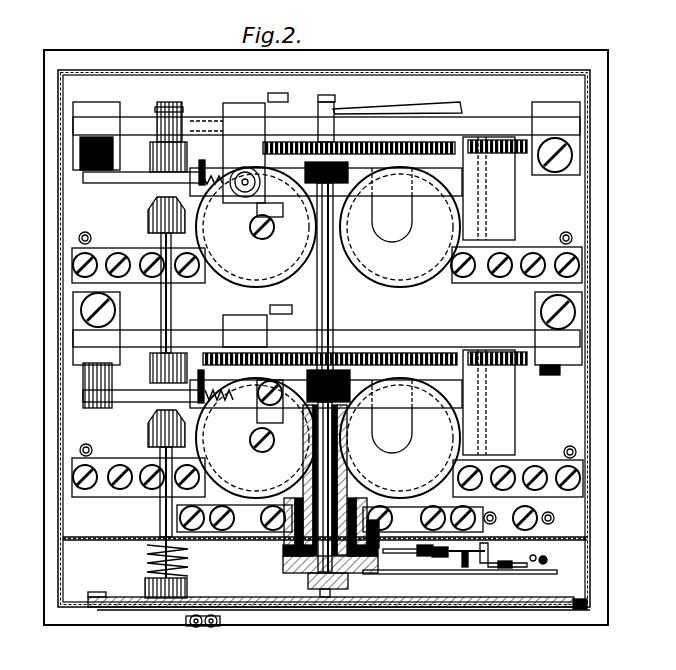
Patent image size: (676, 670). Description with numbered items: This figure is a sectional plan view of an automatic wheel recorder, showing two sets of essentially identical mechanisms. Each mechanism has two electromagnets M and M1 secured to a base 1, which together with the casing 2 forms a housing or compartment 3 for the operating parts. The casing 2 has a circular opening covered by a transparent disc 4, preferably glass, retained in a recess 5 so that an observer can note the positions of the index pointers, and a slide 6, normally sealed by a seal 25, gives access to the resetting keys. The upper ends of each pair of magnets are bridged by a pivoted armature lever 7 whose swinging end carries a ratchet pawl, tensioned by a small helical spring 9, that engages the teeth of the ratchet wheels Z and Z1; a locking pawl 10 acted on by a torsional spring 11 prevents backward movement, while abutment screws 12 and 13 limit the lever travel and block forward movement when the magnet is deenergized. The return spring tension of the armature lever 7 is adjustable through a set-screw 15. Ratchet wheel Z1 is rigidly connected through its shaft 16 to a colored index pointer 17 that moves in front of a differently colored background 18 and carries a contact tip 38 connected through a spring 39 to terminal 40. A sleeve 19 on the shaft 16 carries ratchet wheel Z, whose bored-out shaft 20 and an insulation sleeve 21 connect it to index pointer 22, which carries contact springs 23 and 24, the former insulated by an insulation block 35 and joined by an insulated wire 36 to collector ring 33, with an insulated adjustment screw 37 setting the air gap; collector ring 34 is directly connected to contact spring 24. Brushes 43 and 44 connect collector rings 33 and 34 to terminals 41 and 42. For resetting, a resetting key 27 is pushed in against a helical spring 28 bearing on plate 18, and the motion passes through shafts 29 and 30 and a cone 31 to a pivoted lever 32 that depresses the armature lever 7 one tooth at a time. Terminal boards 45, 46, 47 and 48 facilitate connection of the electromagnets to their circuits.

The base 1 is at (83, 594).
The casing 2 is at (573, 594).
The housing or compartment 3 is at (400, 332).
The transparent disc 4 is at (292, 604).
The recess 5 is at (108, 597).
The slide 6 is at (160, 610).
The armature lever 7 is at (326, 310).
The helical spring 9 is at (210, 190).
The locking pawl 10 is at (210, 160).
The torsional spring 11 is at (201, 150).
The abutment screw 12 is at (150, 157).
The abutment screw 13 is at (280, 211).
The set-screw 15 is at (258, 165).
The shaft 16 is at (336, 300).
The index-pointer 17 is at (557, 572).
The background 18 is at (108, 540).
The sleeve 19 is at (345, 437).
The shaft 20 is at (345, 455).
The insulation sleeve 21 is at (352, 505).
The index-pointer 22 is at (548, 559).
The contact spring 23 is at (466, 568).
The contact spring 24 is at (492, 552).
The seal 25 is at (214, 628).
The resetting key 27 is at (188, 588).
The helical spring 28 is at (186, 562).
The shaft 29 is at (160, 303).
The shaft 30 is at (160, 524).
The cone 31 is at (150, 218).
The lever 32 is at (140, 183).
The collector ring 33 is at (365, 510).
The collector ring 34 is at (429, 519).
The insulation block 35 is at (420, 556).
The insulated wire 36 is at (395, 556).
The insulated adjustment screw 37 is at (440, 558).
The contact-tip 38 is at (506, 569).
The spring 39 is at (397, 101).
The terminal 40 is at (528, 515).
The terminal 41 is at (265, 527).
The terminal 42 is at (372, 525).
The brush 43 is at (292, 512).
The brush 44 is at (380, 512).
The terminal board 45 is at (115, 497).
The terminal board 46 is at (518, 470).
The terminal board 47 is at (138, 257).
The terminal board 48 is at (516, 257).
The electromagnet M is at (256, 438).
The electromagnet M1 is at (256, 227).
The ratchet-wheel Z is at (438, 350).
The ratchet-wheel Z1 is at (442, 147).